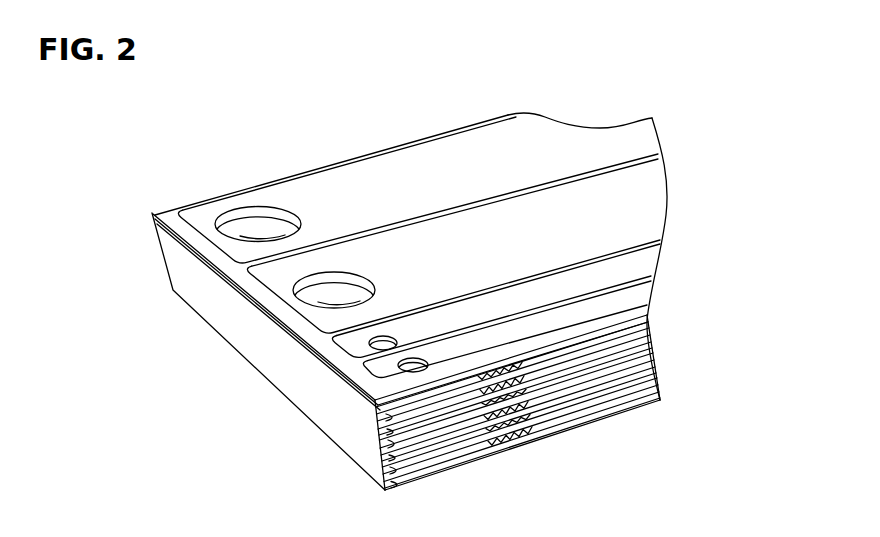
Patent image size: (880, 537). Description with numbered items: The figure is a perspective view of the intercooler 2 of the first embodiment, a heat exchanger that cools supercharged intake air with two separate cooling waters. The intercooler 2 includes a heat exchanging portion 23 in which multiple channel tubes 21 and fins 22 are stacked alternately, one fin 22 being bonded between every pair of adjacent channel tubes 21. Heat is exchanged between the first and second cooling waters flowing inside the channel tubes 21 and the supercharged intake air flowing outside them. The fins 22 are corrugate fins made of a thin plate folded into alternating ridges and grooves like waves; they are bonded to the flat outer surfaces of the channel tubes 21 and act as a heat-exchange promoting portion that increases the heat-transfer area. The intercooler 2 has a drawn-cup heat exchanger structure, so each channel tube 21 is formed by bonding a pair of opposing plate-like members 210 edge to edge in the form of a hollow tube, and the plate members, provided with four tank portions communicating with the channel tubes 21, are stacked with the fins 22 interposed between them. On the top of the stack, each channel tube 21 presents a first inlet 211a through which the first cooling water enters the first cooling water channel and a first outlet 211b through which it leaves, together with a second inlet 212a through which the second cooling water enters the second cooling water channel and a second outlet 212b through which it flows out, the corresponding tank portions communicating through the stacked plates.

The intercooler 2 is at (317, 155).
The channel tube 21 is at (380, 462).
The plate-like member 210 is at (560, 420).
The fin 22 is at (495, 456).
The heat exchanging portion 23 is at (249, 190).
The first inlet 211a is at (232, 216).
The first outlet 211b is at (289, 293).
The second inlet 212a is at (343, 347).
The second outlet 212b is at (371, 381).